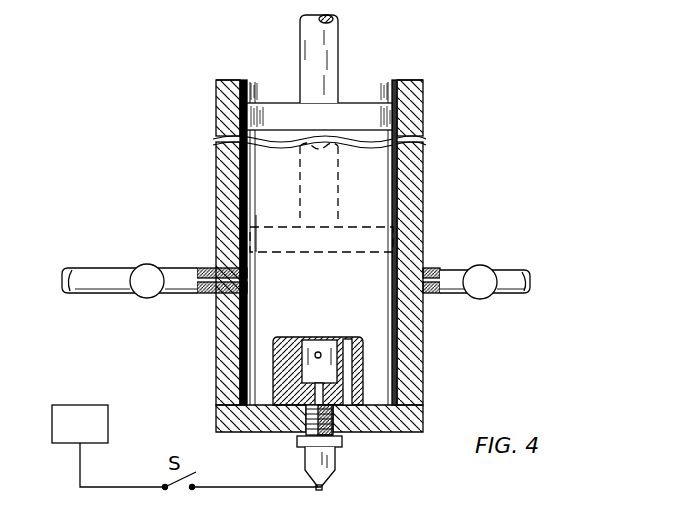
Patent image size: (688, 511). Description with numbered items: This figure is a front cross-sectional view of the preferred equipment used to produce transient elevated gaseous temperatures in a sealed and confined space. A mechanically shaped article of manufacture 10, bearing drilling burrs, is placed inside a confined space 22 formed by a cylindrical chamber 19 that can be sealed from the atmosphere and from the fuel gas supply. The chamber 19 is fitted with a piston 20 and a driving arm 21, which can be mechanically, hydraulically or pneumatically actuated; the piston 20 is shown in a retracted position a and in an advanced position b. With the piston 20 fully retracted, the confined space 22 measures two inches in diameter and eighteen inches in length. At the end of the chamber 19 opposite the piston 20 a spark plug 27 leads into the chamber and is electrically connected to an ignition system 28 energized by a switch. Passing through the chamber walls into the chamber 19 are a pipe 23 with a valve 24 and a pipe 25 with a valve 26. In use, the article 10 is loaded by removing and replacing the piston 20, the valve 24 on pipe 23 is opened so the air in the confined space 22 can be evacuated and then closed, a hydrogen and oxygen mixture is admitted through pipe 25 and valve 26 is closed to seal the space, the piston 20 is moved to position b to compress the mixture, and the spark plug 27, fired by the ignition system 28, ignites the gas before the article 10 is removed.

The mechanically shaped article of manufacture 10 is at (363, 382).
The cylindrical chamber 19 is at (228, 115).
The piston 20 is at (368, 112).
The driving arm 21 is at (323, 58).
The confined space 22 is at (253, 347).
The pipe 23 is at (515, 277).
The valve 24 is at (483, 299).
The pipe 25 is at (208, 293).
The valve 26 is at (112, 293).
The spark plug 27 is at (300, 448).
The ignition system 28 is at (108, 446).